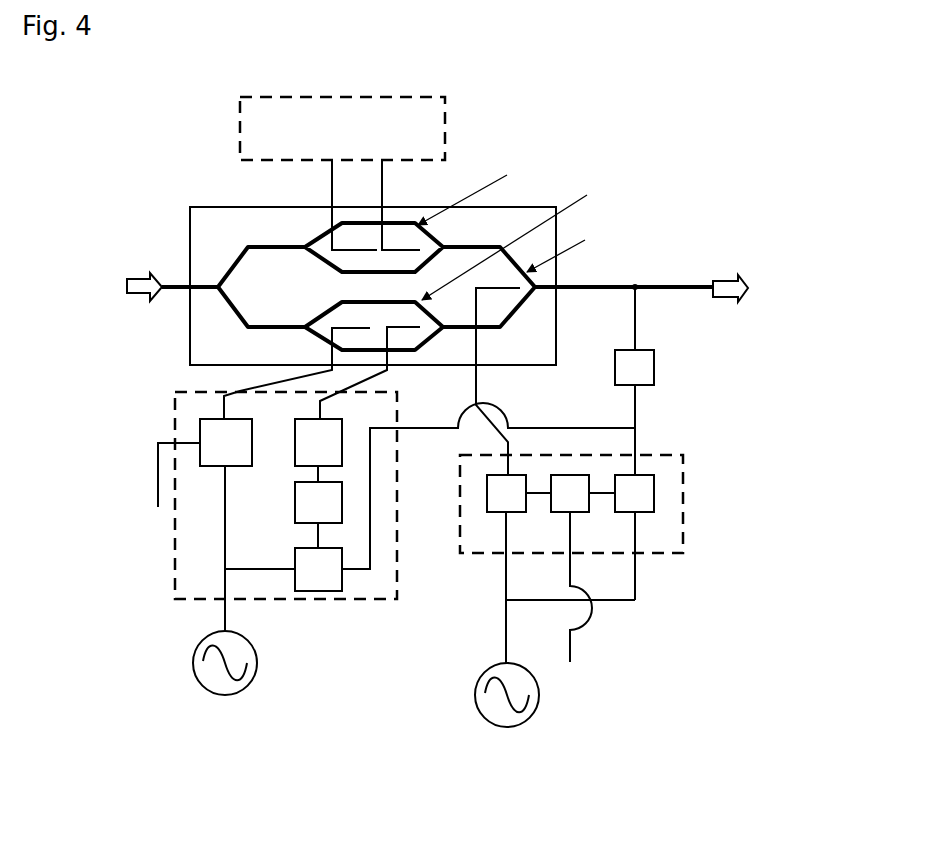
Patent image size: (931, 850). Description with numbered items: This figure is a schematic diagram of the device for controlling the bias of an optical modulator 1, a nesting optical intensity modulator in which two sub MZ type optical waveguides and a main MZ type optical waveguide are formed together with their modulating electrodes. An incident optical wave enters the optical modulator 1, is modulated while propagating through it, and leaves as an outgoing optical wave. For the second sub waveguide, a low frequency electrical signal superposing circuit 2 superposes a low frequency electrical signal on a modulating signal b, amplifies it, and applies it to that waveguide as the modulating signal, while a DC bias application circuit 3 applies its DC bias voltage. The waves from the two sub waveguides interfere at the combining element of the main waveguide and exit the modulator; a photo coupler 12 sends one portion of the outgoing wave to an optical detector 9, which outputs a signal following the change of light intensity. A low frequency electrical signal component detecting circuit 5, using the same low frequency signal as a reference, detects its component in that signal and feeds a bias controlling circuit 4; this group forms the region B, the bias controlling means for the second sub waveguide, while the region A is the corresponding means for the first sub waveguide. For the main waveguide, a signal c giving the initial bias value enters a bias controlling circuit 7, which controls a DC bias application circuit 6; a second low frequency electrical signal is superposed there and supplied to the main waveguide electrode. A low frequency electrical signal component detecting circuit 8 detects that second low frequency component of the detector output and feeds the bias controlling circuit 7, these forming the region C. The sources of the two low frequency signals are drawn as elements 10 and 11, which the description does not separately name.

The optical modulator 1 is at (222, 348).
The low frequency electrical signal superposing circuit 2 is at (203, 478).
The DC bias application circuit 3 is at (318, 442).
The bias controlling circuit 4 is at (318, 494).
The low frequency electrical signal component detecting circuit 5 is at (430, 497).
The DC bias application circuit 6 is at (519, 493).
The bias controlling circuit 7 is at (583, 579).
The low frequency electrical signal component detecting circuit 8 is at (580, 537).
The optical detector 9 is at (634, 381).
The low-frequency oscillator fB 10 is at (232, 687).
The low-frequency oscillator fC 11 is at (515, 717).
The photo coupler 12 is at (638, 290).
The region A is at (342, 128).
The region B is at (332, 600).
The region C is at (668, 553).